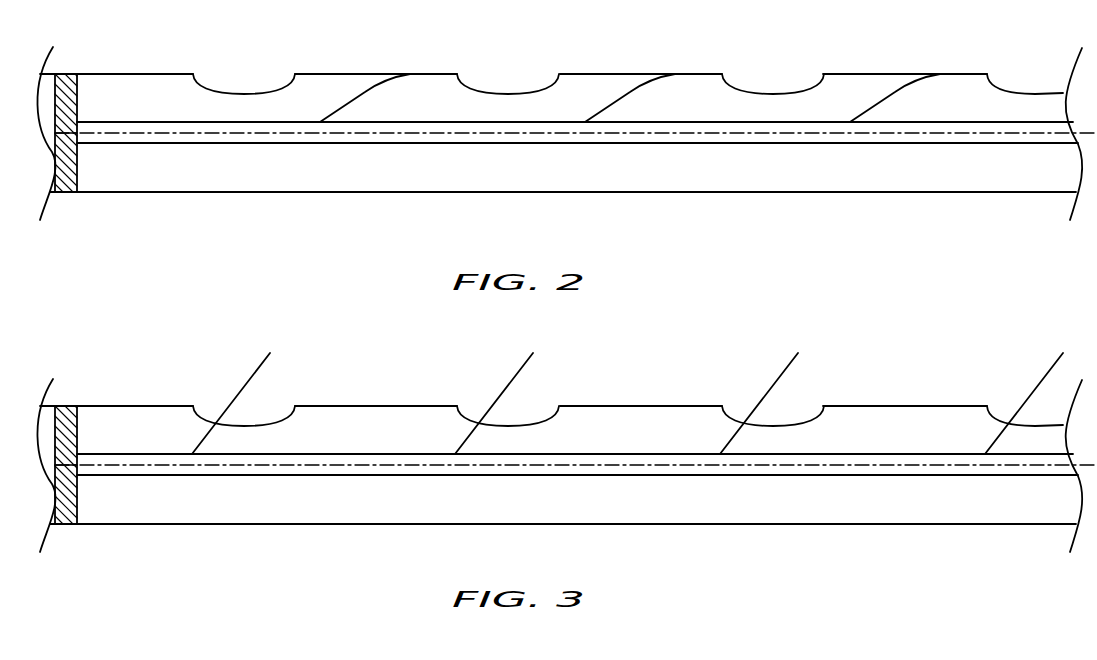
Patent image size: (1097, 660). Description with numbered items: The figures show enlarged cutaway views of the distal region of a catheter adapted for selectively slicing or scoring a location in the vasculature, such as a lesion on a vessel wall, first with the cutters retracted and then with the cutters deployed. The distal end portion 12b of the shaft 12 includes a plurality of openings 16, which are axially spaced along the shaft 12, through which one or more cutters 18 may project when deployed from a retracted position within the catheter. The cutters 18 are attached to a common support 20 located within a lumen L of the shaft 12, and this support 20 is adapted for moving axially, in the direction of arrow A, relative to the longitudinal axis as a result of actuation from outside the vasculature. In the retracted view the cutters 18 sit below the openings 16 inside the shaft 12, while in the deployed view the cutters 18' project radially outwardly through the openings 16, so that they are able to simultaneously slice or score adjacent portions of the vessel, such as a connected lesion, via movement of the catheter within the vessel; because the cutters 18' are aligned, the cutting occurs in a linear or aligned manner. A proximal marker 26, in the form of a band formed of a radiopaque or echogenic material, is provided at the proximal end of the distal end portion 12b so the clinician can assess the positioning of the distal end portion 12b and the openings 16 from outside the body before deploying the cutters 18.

In FIG. 2, the shaft 12 is at (872, 192).
In FIG. 3, the shaft 12 is at (872, 524).
In FIG. 2, the distal end portion 12b is at (643, 58).
In FIG. 3, the distal end portion 12b is at (621, 381).
In FIG. 2, the openings 16 is at (244, 94).
In FIG. 3, the openings 16 is at (280, 420).
In FIG. 2, the cutters 18 is at (630, 79).
In FIG. 3, the deployed cutters 18' is at (627, 393).
In FIG. 2, the common support 20 is at (758, 143).
In FIG. 3, the common support 20 is at (758, 475).
In FIG. 2, the proximal markers 26 is at (65, 74).
In FIG. 3, the proximal markers 26 is at (65, 406).
In FIG. 2, the lumen L is at (687, 118).
In FIG. 3, the lumen L is at (687, 450).
In FIG. 2, the arrow A is at (430, 218).